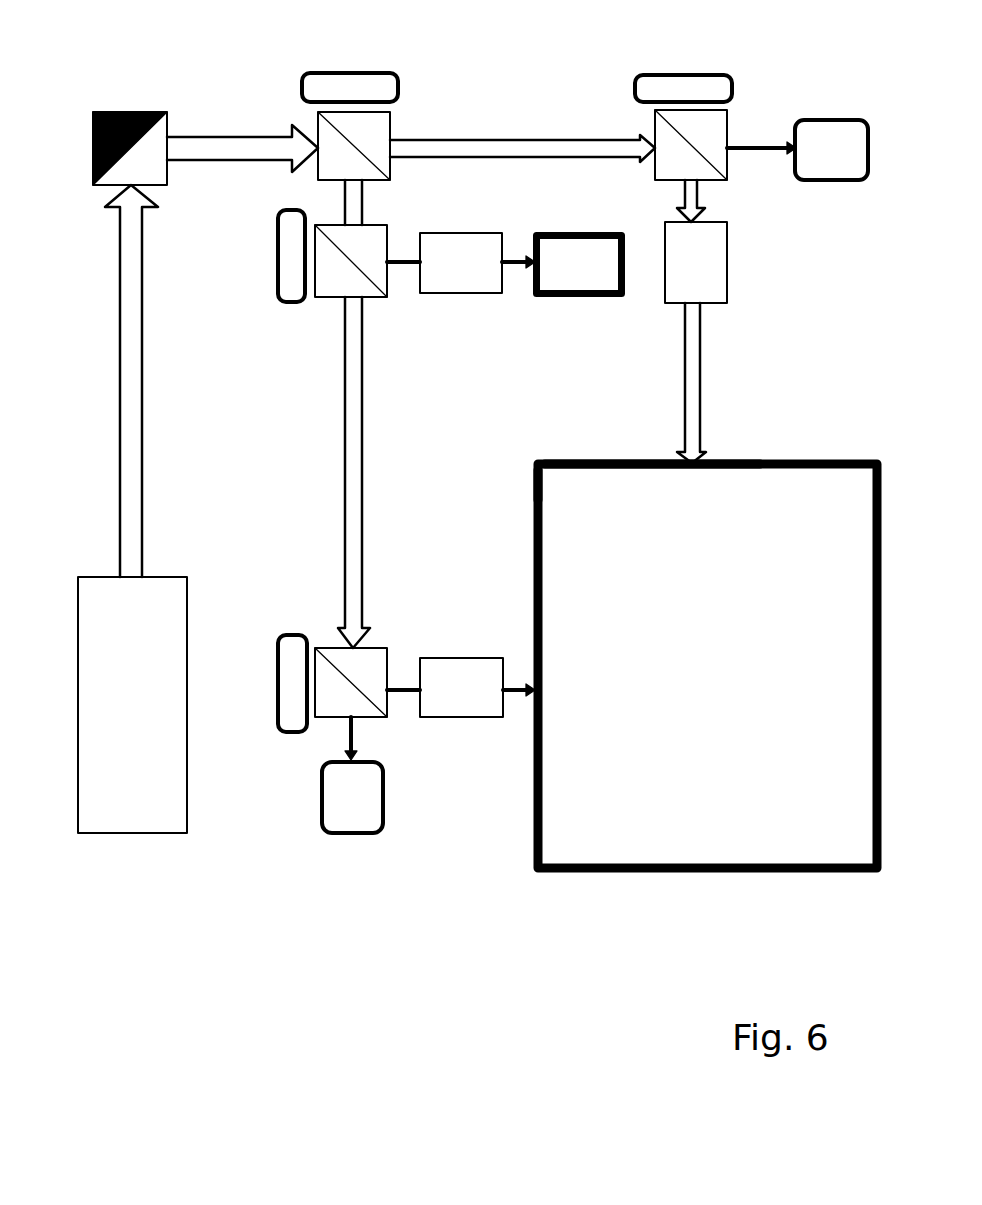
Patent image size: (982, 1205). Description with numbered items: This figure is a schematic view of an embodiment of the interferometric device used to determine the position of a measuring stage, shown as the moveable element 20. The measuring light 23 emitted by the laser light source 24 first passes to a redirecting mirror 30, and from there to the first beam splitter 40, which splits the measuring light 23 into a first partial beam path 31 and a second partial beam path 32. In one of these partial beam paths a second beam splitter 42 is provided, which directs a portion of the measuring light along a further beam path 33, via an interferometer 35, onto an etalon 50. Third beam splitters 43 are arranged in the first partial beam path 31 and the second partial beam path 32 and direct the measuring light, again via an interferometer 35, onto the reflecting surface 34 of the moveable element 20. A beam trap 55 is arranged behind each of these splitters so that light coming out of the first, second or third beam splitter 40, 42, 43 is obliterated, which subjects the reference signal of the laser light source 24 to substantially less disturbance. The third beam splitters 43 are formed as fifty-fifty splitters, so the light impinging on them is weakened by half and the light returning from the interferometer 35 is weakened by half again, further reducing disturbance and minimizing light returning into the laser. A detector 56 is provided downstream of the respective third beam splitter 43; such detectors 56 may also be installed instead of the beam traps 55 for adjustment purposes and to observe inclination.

The moveable element 20 is at (716, 747).
The measuring light 23 is at (118, 310).
The laser light source 24 is at (150, 724).
The redirecting mirror 30 is at (93, 130).
The first partial beam path 31 is at (517, 140).
The second partial beam path 32 is at (344, 412).
The third beam 33 is at (405, 270).
The reflecting surface 34 is at (742, 448).
The interferometer 35 is at (710, 274).
The first beam splitter 40 is at (392, 124).
The second beam splitter 42 is at (325, 300).
The third beam splitter 43 is at (728, 125).
The etalon 50 is at (543, 298).
The beam trap 55 is at (372, 73).
The detector 56 is at (818, 166).